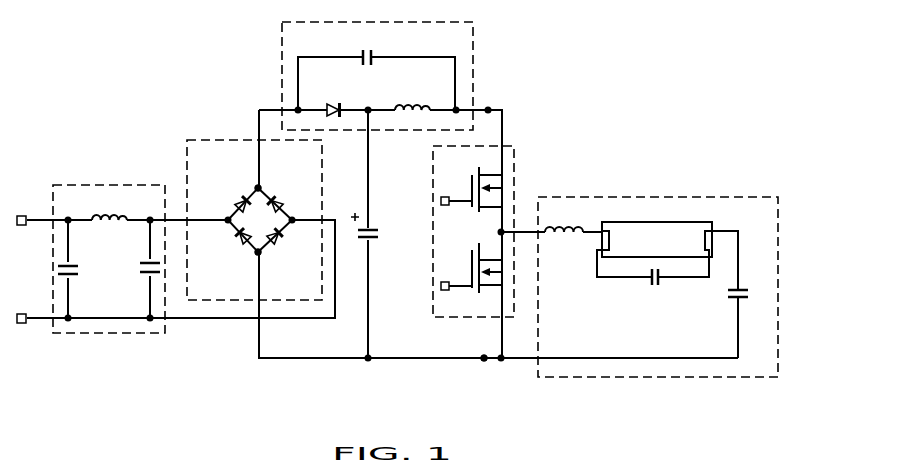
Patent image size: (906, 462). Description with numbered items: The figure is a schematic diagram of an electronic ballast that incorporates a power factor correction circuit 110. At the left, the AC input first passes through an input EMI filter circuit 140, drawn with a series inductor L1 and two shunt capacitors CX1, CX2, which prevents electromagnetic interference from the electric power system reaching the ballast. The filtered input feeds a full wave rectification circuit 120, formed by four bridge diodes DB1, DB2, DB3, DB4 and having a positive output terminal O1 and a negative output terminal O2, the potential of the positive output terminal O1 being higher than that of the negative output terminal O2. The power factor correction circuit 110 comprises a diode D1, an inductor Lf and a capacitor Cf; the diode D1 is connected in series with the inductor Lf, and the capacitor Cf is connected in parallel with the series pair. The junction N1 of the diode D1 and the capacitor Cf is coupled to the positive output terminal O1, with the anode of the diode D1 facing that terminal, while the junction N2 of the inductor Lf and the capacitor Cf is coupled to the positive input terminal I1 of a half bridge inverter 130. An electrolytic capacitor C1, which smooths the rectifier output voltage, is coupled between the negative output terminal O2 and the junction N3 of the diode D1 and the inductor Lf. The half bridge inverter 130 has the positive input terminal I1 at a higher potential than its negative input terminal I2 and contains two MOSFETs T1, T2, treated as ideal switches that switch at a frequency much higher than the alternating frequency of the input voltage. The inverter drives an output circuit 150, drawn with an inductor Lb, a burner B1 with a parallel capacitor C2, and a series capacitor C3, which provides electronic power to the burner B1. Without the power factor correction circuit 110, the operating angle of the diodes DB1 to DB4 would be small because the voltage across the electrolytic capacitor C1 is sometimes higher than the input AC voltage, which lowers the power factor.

The power factor correction circuit 110 is at (281, 40).
The full wave rectification circuit 120 is at (195, 140).
The half bridge inverter 130 is at (514, 170).
The input EMI filter circuit 140 is at (77, 184).
The output circuit 150 is at (647, 197).
The inductor L1 is at (109, 206).
The capacitor CX1 is at (82, 257).
The capacitor CX2 is at (135, 280).
The diode DB1 is at (289, 195).
The diode DB2 is at (228, 245).
The diode DB3 is at (289, 245).
The diode DB4 is at (228, 195).
The positive output terminal O1 is at (258, 188).
The negative output terminal O2 is at (258, 252).
The junction N1 is at (298, 109).
The junction N2 is at (456, 109).
The junction N3 is at (368, 110).
The positive input terminal I1 is at (488, 109).
The negative input terminal I2 is at (484, 362).
The capacitor Cf is at (368, 45).
The diode D1 is at (334, 100).
The inductor Lf is at (412, 96).
The electrolytic capacitor C1 is at (376, 229).
The MOSFET T1 is at (471, 186).
The MOSFET T2 is at (471, 268).
The inductor Lb is at (564, 217).
The burner B1 is at (654, 249).
The capacitor C2 is at (655, 288).
The capacitor C3 is at (751, 296).